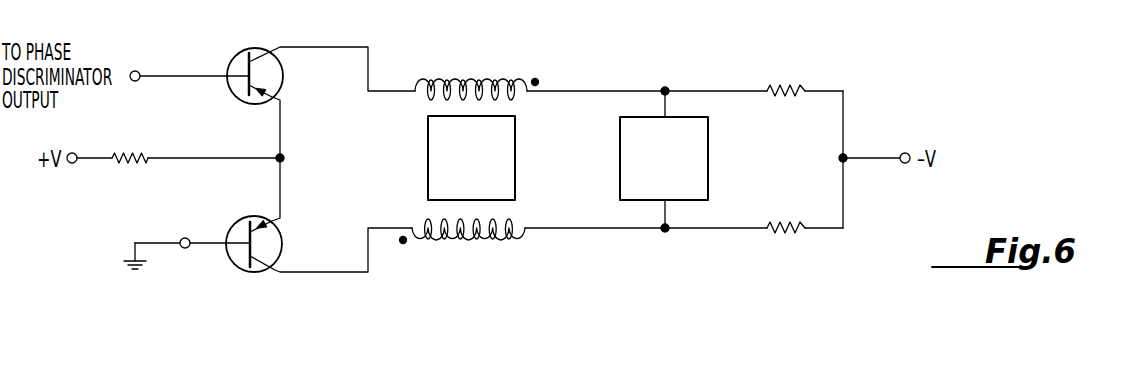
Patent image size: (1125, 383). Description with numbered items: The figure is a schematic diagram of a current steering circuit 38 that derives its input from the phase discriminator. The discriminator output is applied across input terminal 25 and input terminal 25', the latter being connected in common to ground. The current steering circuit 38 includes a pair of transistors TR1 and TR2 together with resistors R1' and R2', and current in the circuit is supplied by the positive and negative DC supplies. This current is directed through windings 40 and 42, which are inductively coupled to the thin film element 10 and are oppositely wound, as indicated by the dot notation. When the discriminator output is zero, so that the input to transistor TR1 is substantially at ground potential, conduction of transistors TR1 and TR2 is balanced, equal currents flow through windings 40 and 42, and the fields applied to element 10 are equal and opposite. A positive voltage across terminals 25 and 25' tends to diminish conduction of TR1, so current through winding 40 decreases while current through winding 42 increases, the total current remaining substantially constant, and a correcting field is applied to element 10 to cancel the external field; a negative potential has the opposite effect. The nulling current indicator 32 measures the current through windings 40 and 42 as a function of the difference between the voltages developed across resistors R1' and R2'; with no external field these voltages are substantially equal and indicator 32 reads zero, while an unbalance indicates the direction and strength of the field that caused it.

The input terminal 25 is at (189, 54).
The input terminal 25' is at (187, 227).
The transistor TR1 is at (242, 50).
The transistor TR2 is at (231, 258).
The winding 40 is at (467, 78).
The winding 42 is at (467, 245).
The thin film element 10 is at (428, 154).
The current steering circuit 38 is at (650, 81).
The nulling current indicator 32 is at (618, 155).
The resistor R1' is at (786, 67).
The resistor R2' is at (786, 253).